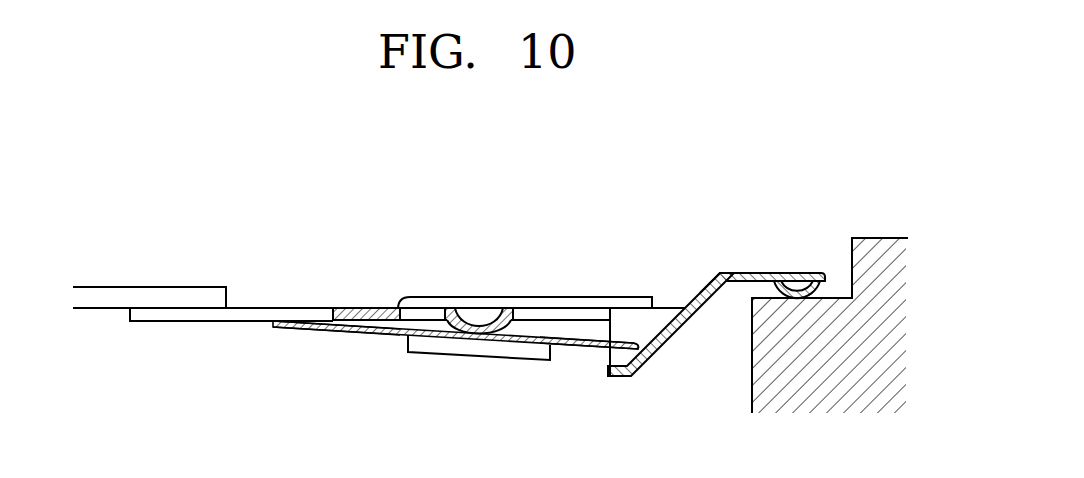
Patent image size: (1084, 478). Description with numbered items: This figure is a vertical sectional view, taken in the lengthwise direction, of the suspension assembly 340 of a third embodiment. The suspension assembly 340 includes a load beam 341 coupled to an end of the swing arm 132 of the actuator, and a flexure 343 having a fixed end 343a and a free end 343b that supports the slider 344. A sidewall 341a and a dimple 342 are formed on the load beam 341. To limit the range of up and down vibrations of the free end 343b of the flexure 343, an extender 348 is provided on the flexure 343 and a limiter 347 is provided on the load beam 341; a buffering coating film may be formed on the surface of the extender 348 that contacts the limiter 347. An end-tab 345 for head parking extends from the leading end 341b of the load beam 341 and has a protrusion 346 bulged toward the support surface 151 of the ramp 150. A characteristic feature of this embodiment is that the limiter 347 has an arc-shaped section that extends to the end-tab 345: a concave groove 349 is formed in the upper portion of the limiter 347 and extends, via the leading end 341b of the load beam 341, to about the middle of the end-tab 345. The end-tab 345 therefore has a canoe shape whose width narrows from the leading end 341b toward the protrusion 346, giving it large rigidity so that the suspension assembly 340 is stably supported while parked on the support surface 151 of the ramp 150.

The swing arm 132 is at (146, 296).
The ramp 150 is at (822, 312).
The support surface 151 is at (838, 296).
The suspension assembly 340 is at (477, 311).
The load beam 341 is at (341, 306).
The sidewall 341a is at (572, 296).
The leading end 341b is at (661, 305).
The dimple 342 is at (484, 314).
The flexure 343 is at (455, 381).
The fixed end 343a is at (323, 331).
The free end 343b is at (578, 348).
The slider 344 is at (475, 353).
The end-tab 345 is at (748, 272).
The protrusion 346 is at (799, 289).
The limiter 347 is at (624, 378).
The extender 348 is at (655, 352).
The concave groove 349 is at (704, 282).